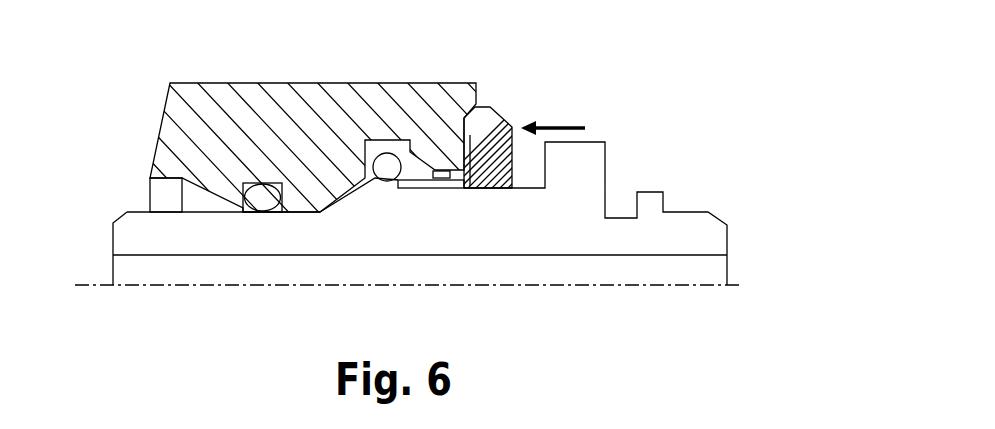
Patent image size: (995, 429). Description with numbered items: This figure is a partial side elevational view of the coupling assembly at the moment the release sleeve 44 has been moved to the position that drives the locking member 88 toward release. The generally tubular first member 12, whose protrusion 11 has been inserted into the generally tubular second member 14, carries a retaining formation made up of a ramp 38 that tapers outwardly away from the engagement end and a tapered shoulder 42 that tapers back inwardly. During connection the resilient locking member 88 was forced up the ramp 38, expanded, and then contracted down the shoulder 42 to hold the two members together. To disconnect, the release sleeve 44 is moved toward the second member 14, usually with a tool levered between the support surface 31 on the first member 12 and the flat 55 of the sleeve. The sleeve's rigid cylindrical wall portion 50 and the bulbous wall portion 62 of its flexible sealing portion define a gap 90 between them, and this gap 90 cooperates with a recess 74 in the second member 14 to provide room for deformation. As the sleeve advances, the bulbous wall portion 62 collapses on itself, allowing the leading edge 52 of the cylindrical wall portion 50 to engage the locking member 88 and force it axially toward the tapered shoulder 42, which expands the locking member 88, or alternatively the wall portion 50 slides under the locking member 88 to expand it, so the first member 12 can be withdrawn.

The protrusion 11 is at (211, 207).
The first member 12 is at (609, 150).
The second member 14 is at (142, 200).
The support surface 31 is at (545, 179).
The ramp 38 is at (333, 128).
The shoulder 42 is at (383, 184).
The release sleeve 44 is at (510, 116).
The cylindrical wall portion 50 is at (449, 189).
The leading edge 52 is at (387, 182).
The flat 55 is at (513, 155).
The bulbous wall portion 62 is at (483, 104).
The recess 74 is at (468, 150).
The locking member 88 is at (387, 160).
The gap 90 is at (476, 150).